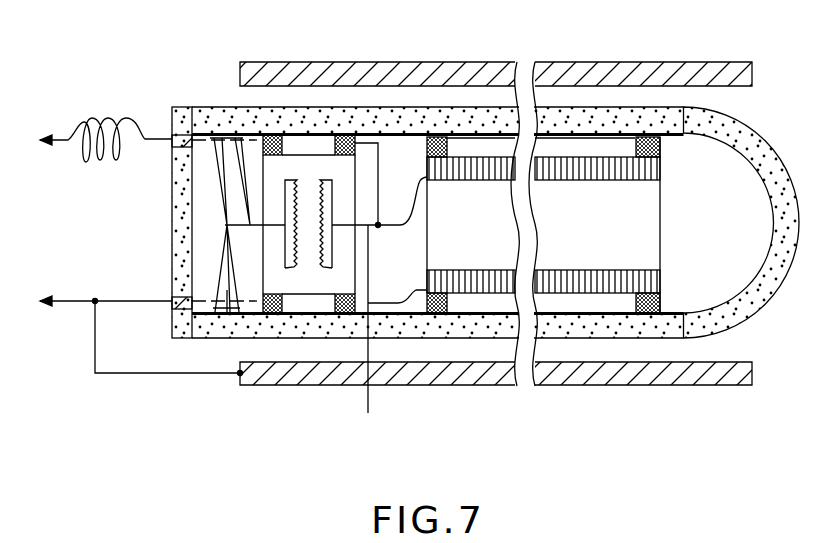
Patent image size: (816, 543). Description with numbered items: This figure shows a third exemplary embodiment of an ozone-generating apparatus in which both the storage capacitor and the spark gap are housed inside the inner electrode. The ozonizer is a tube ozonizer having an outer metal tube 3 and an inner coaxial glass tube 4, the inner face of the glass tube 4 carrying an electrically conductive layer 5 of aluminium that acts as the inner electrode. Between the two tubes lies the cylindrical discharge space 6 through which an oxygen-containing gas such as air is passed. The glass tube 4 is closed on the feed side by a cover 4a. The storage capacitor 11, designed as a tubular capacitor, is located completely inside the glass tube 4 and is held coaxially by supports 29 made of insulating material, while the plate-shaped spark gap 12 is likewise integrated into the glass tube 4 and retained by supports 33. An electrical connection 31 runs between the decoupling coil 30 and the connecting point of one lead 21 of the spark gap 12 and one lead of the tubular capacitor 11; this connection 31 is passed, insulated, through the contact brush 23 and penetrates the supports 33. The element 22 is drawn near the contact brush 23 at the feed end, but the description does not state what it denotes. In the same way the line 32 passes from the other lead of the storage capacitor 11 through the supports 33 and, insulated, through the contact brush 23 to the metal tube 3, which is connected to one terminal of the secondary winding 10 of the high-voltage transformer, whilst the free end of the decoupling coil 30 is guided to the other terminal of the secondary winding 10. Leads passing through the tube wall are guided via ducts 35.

The outer metal tube 3 is at (712, 78).
The inner glass tube 4 is at (752, 303).
The cover 4a is at (172, 223).
The electrically conductive layer 5 is at (596, 136).
The discharge space 6 is at (695, 100).
The secondary winding 10 is at (64, 237).
The storage capacitor 11 is at (498, 282).
The spark gap 12 is at (303, 277).
The lead of the spark gap 21 is at (389, 293).
The needle electrodes 22 is at (228, 128).
The contact brush 23 is at (233, 283).
The supports 29 is at (442, 134).
The decoupling coil 30 is at (102, 118).
The electrical connection 31 is at (152, 130).
The line 32 is at (398, 305).
The supports 33 is at (277, 132).
The ducts 35 is at (172, 147).